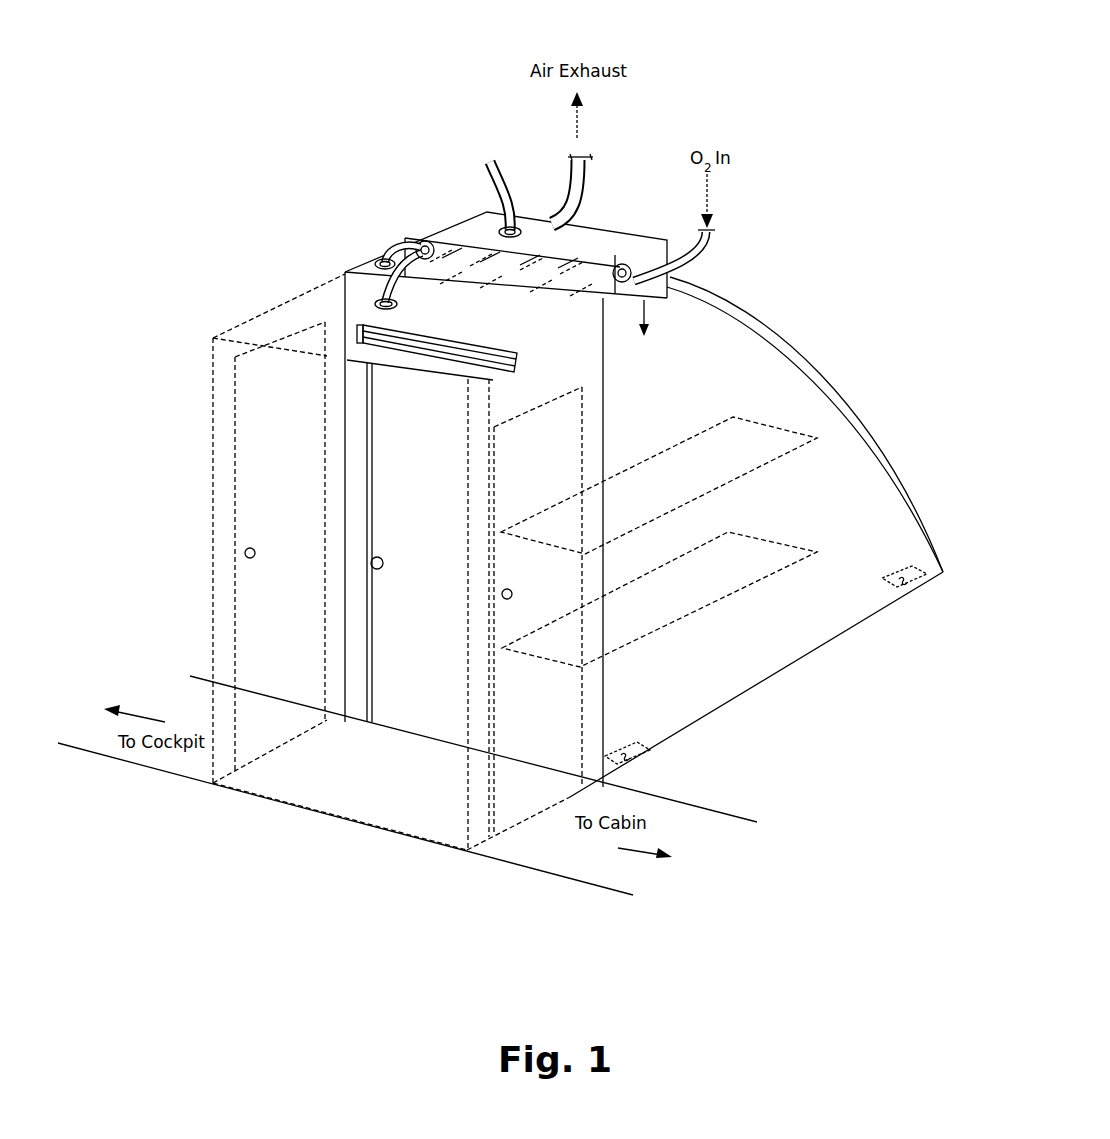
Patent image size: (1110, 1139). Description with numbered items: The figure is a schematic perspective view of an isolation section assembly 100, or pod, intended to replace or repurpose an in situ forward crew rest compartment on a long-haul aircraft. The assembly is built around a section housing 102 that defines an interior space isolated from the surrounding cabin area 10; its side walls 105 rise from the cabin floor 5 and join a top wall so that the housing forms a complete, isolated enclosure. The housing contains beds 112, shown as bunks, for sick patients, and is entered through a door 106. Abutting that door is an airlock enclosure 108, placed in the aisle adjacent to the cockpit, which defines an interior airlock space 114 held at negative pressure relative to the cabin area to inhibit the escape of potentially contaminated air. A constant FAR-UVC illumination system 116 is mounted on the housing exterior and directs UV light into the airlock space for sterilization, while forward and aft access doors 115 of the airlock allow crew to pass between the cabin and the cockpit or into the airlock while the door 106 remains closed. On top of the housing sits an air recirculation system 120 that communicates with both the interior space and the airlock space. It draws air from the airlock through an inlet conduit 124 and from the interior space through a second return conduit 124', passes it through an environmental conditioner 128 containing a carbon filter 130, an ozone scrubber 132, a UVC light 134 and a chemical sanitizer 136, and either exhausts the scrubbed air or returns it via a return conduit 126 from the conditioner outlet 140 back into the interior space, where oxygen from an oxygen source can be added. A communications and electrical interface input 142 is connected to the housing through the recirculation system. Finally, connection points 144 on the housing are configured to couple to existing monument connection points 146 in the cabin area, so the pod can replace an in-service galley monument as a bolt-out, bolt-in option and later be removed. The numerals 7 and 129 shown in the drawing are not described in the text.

The isolation section assembly 100 is at (848, 104).
The cabin floor 5 is at (825, 713).
The fuselage 7 is at (828, 388).
The cabin area 10 is at (534, 848).
The section housing 102 is at (653, 413).
The side walls 105 is at (867, 425).
The door 106 is at (425, 715).
The airlock enclosure 108 is at (213, 445).
The beds 112 is at (760, 422).
The interior airlock space 114 is at (345, 800).
The forward and aft access doors 115 is at (298, 324).
The FAR-UVC illumination system 116 is at (345, 290).
The air recirculation system 120 is at (615, 195).
The inlet conduit 124 is at (404, 243).
The second return conduit 124' is at (386, 232).
The return conduit 126 is at (607, 292).
The environmental conditioner 128 is at (472, 220).
The exhaust pipe 129 is at (566, 190).
The carbon filter 130 is at (450, 282).
The ozone scrubber 132 is at (490, 284).
The UVC light 134 is at (526, 294).
The chemical sanitizer 136 is at (566, 292).
The outlet 140 is at (628, 262).
The communications and electrical interface input 142 is at (490, 177).
The connection points 144 is at (640, 752).
The monument connection points 146 is at (625, 745).